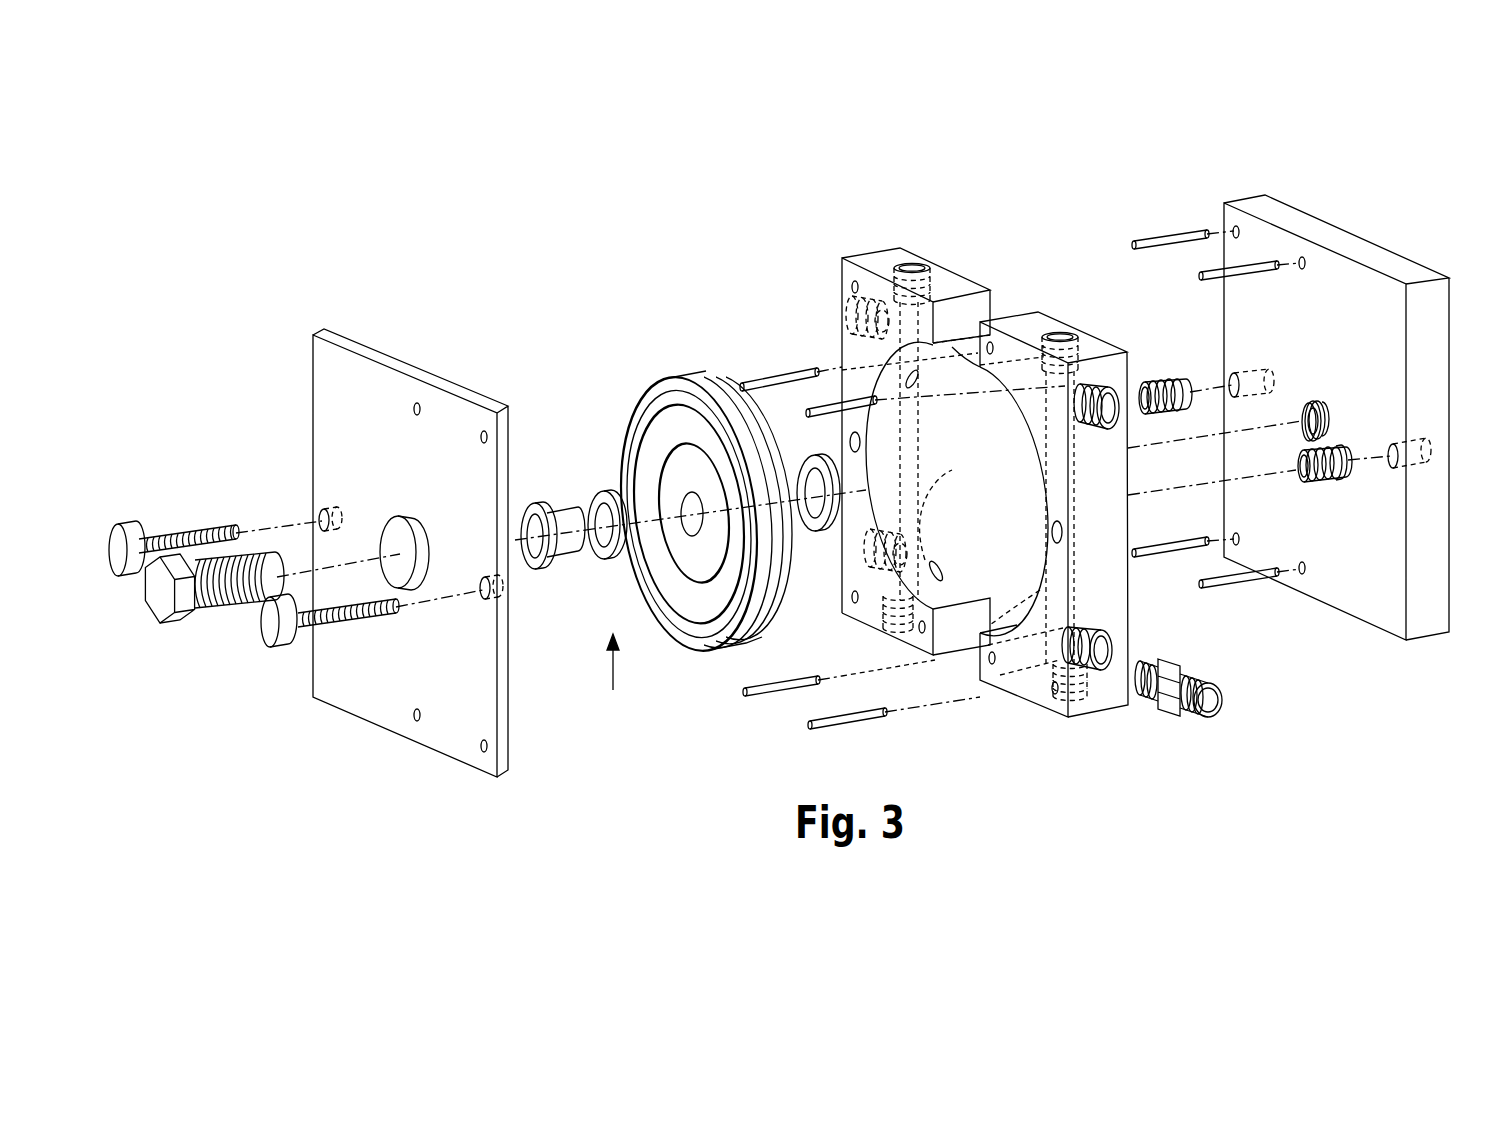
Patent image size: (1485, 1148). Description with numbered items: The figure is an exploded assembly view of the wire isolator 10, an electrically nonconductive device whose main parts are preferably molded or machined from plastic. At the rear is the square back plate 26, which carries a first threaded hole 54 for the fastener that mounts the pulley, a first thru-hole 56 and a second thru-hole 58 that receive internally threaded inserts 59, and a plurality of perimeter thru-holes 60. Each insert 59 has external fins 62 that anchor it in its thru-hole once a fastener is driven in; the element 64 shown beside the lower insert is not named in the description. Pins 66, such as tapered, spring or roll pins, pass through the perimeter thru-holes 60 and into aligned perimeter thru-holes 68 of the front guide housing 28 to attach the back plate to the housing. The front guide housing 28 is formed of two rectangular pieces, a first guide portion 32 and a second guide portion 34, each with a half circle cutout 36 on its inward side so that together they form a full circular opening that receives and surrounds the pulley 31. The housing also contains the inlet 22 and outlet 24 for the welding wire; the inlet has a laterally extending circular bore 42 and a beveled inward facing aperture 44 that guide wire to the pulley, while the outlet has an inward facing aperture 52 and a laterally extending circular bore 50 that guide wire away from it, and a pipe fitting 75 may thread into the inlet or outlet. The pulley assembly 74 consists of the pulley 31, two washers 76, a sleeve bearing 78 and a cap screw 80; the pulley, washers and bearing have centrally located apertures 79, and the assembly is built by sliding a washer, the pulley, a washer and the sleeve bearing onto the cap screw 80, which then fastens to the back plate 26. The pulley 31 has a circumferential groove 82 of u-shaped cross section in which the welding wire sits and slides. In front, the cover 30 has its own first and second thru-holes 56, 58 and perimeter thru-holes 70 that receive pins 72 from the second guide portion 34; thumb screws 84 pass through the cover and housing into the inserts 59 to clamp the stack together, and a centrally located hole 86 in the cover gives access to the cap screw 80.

The wire isolator 10 is at (433, 226).
The inlet 22 is at (847, 300).
The outlet 24 is at (913, 266).
The square back plate 26 is at (1383, 243).
The front guide housing 28 is at (978, 280).
The cover 30 is at (311, 394).
The pulley 31 is at (649, 391).
The first guide portion 32 is at (1060, 315).
The second guide portion 34 is at (882, 250).
The half circle cutout 36 is at (920, 456).
The laterally extending circular bore 42 is at (1018, 671).
The inward facing aperture 44 is at (995, 622).
The laterally extending circular bore 50 is at (923, 518).
The inward facing aperture 52 is at (944, 564).
The first threaded hole 54 is at (1305, 402).
The first thru-hole 56 is at (320, 518).
The second thru-hole 58 is at (482, 584).
The internally threaded insert 59 is at (1143, 414).
The perimeter thru-holes 60 is at (1302, 258).
The external fins 62 is at (1170, 384).
The fitting flange 64 is at (1339, 452).
The pins 66 is at (1197, 266).
The perimeter thru-holes 68 is at (853, 283).
The perimeter thru-holes 70 is at (483, 749).
The pins 72 is at (824, 408).
The pulley assembly 74 is at (613, 690).
The pipe fitting 75 is at (1165, 706).
The washers 76 is at (608, 560).
The sleeve bearing 78 is at (533, 503).
The centrally located apertures 79 is at (679, 497).
The cap screw 80 is at (203, 615).
The circumferential groove 82 is at (725, 396).
The thumb screws 84 is at (156, 545).
The centrally located hole 86 is at (410, 538).